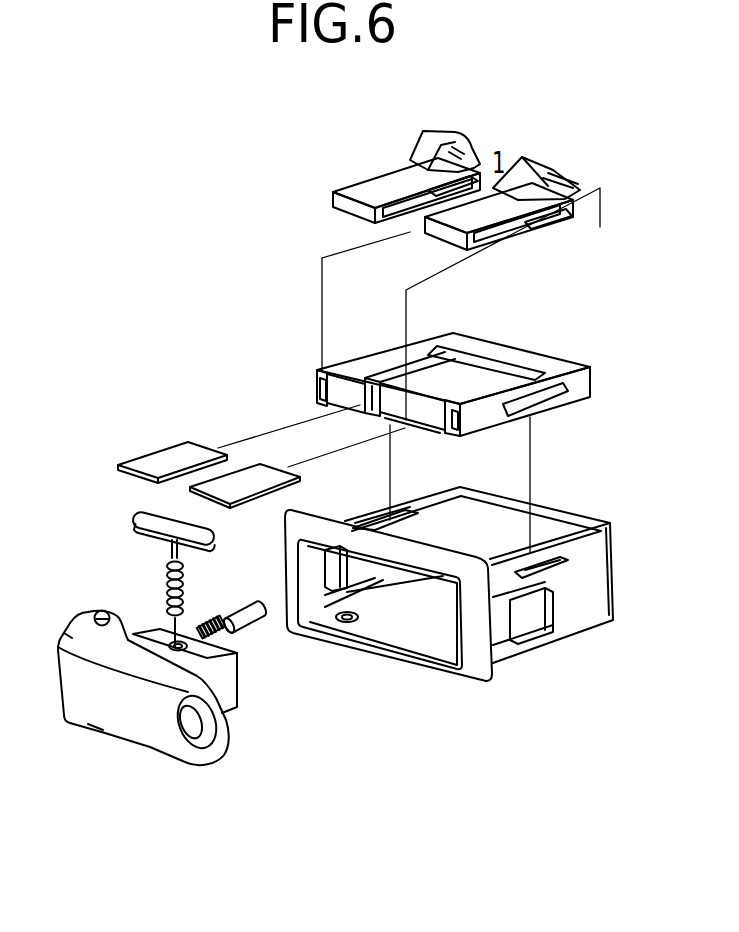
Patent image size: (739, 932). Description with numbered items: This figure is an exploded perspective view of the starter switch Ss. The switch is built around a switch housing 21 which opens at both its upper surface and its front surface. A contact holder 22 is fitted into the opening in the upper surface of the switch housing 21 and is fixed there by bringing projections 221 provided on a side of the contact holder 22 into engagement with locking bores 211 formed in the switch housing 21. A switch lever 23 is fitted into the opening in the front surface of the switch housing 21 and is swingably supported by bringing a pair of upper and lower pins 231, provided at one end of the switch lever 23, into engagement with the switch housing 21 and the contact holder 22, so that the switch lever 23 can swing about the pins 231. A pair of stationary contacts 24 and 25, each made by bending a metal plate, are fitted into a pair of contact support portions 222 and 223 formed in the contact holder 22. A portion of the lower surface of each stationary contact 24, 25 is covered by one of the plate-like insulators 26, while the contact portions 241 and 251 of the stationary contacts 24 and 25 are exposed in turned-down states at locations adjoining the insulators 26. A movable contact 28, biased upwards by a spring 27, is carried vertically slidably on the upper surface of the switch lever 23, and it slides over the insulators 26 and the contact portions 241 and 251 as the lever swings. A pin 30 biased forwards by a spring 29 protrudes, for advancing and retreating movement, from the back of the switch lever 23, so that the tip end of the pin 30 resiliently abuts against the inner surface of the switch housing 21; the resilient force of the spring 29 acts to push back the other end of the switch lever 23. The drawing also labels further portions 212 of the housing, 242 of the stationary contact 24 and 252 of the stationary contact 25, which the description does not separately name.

The starter switch Ss is at (255, 354).
The switch housing 21 is at (589, 508).
The locking bore 211 is at (388, 522).
The engagement projection 212 is at (357, 568).
The contact holder 22 is at (551, 350).
The projection 221 is at (563, 398).
The contact support portion 222 is at (372, 380).
The contact support portion 223 is at (470, 385).
The switch lever 23 is at (158, 750).
The pin 231 is at (80, 755).
The stationary contact 24 is at (366, 168).
The contact portion 241 is at (453, 188).
The raised portion 242 is at (437, 128).
The stationary contact 25 is at (491, 252).
The contact portion 251 is at (553, 223).
The raised portion 252 is at (533, 160).
The insulator 26 is at (171, 455).
The spring 27 is at (183, 578).
The movable contact 28 is at (160, 520).
The spring 29 is at (196, 627).
The pin 30 is at (246, 609).